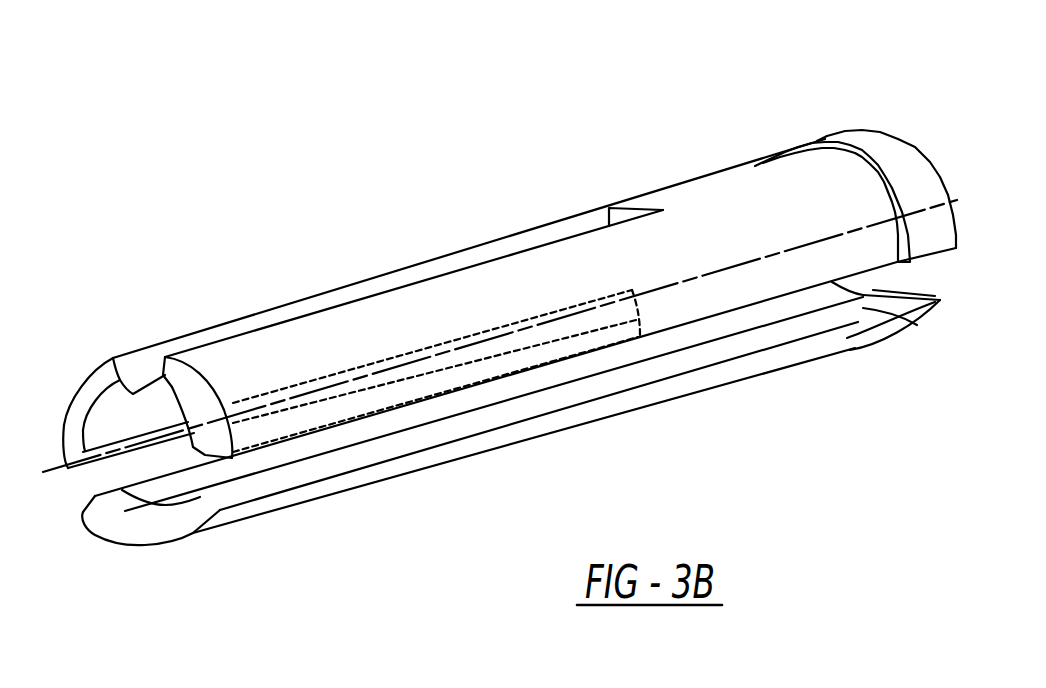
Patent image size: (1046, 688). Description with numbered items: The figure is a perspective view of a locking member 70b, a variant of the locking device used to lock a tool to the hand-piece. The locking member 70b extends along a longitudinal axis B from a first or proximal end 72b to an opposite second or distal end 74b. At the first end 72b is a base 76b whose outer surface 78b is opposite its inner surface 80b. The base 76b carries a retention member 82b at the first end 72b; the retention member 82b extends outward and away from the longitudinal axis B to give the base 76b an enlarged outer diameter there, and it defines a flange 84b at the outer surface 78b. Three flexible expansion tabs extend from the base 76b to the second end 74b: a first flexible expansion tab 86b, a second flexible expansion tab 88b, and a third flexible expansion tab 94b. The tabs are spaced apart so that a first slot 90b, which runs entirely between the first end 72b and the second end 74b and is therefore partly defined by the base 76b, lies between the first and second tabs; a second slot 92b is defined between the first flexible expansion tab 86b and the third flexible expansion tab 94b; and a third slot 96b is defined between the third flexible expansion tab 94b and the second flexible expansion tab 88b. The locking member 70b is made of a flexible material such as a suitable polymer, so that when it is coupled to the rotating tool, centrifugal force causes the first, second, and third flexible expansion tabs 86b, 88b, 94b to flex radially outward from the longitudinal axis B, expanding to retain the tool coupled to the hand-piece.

The locking member 70b is at (207, 180).
The first end 72b is at (915, 295).
The second end 74b is at (158, 532).
The base 76b is at (765, 187).
The outer surface 78b is at (705, 203).
The inner surface 80b is at (737, 322).
The retention member 82b is at (885, 150).
The flange 84b is at (826, 148).
The first flexible expansion tab 86b is at (300, 355).
The second flexible expansion tab 88b is at (350, 482).
The first slot 90b is at (860, 308).
The second slot 92b is at (497, 258).
The third flexible expansion tab 94b is at (90, 387).
The third slot 96b is at (100, 462).
The longitudinal axis B is at (922, 208).